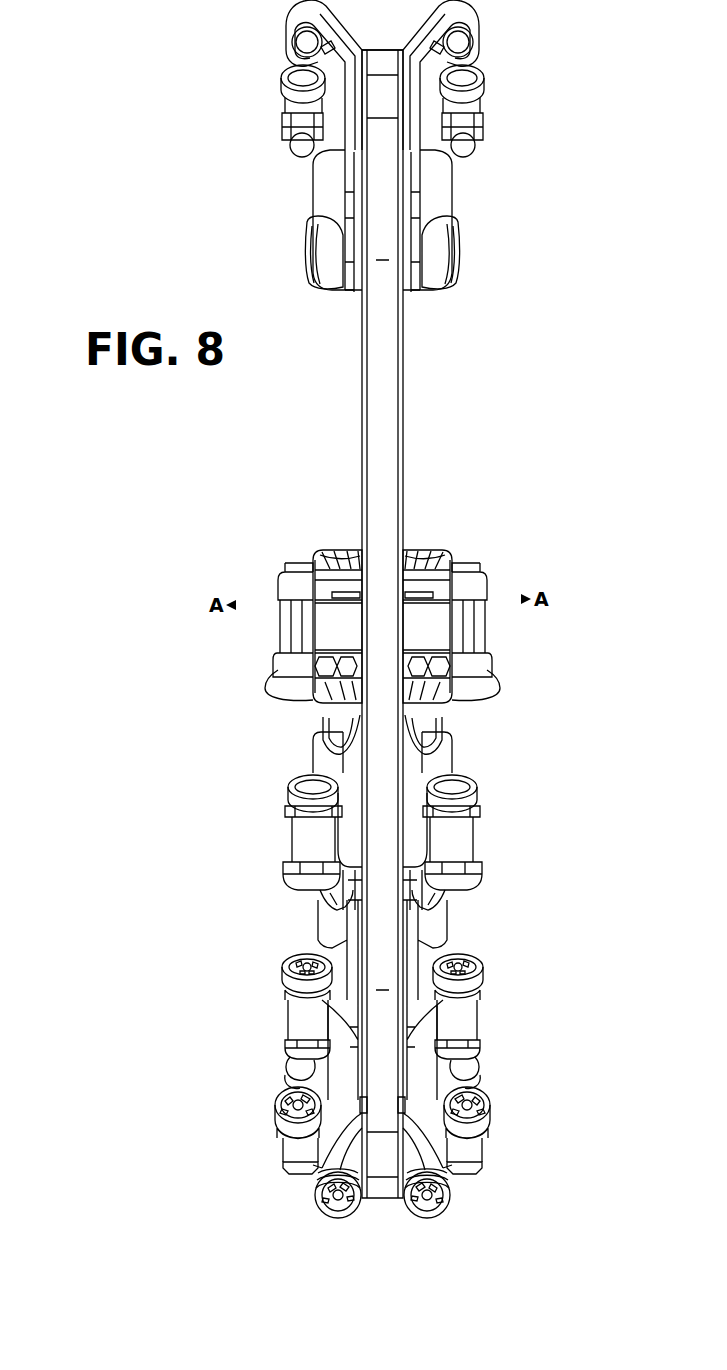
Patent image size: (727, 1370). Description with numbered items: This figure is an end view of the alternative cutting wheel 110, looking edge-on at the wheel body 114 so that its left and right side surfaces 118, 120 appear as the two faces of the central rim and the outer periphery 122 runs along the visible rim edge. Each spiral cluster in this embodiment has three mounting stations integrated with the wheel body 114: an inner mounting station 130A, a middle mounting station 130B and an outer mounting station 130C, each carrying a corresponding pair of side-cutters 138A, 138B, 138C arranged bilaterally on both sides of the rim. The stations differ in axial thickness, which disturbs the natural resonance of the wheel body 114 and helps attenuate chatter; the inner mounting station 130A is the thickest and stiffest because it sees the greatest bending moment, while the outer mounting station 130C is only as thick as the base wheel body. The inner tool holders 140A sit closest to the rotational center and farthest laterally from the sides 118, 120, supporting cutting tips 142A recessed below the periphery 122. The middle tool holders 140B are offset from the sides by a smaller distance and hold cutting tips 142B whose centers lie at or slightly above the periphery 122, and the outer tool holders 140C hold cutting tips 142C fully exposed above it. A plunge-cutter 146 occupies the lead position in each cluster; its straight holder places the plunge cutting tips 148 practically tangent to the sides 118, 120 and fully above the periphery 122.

The mounting assembly 110 is at (85, 244).
The wheel body 114 is at (403, 398).
The side surface 118 is at (362, 430).
The side surface 120 is at (399, 443).
The outer periphery 122 is at (380, 462).
The inner mounting station 130A is at (409, 293).
The middle mounting station 130B is at (310, 1000).
The outer mounting station 130C is at (412, 734).
The side-cutter 138A is at (379, 643).
The side-cutter 138B is at (382, 542).
The side-cutter 138C is at (384, 853).
The inner tool holder 140A is at (385, 681).
The middle tool holder 140B is at (388, 1053).
The outer tool holder 140C is at (386, 875).
The cutting tip 142A is at (387, 602).
The cutting tip 142B is at (381, 981).
The cutting tip 142C is at (386, 781).
The plunge-cutter 146 is at (384, 903).
The cutting tip 148 is at (383, 898).